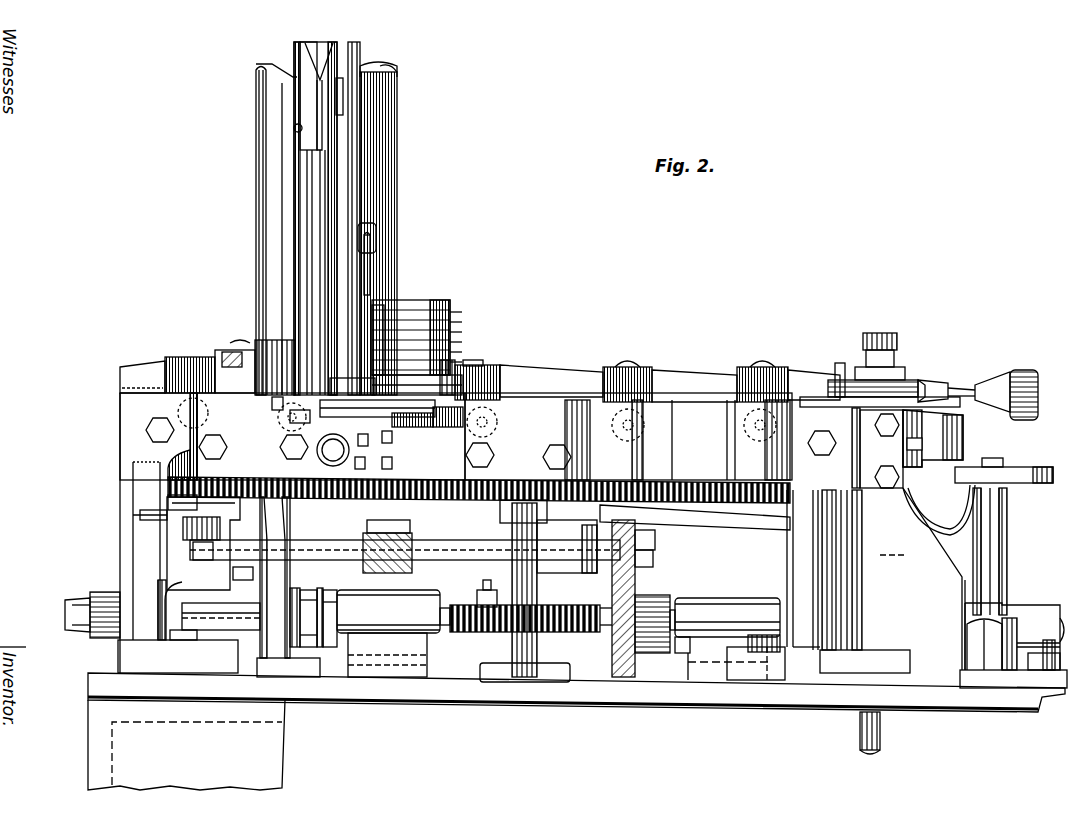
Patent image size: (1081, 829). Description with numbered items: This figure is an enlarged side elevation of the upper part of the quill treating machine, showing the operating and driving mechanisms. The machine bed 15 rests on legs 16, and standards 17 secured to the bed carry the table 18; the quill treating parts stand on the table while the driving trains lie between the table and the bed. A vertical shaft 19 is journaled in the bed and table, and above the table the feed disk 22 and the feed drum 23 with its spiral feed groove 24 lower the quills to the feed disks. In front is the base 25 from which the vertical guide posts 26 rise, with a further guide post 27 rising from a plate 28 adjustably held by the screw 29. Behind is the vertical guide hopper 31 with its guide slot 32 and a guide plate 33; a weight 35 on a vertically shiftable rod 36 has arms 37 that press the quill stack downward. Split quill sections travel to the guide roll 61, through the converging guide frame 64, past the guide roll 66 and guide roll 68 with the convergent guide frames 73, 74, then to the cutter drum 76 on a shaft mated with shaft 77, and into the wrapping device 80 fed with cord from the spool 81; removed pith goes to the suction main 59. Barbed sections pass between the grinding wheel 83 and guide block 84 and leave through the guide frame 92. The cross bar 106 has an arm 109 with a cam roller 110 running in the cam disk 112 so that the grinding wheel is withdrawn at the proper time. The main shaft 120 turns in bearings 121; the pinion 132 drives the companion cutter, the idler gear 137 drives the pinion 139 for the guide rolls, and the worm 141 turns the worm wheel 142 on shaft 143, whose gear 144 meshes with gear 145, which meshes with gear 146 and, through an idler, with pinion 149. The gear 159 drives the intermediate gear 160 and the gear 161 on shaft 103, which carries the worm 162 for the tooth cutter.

The machine bed 15 is at (357, 690).
The legs 16 is at (282, 762).
The standards 17 is at (120, 545).
The table 18 is at (168, 462).
The vertical shaft 19 is at (232, 594).
The feed disk 22 is at (395, 390).
The feed drum 23 is at (420, 300).
The spiral feed groove 24 is at (462, 312).
The base 25 is at (415, 438).
The vertical guide posts 26 is at (315, 225).
The guide post 27 is at (397, 140).
The plate 28 is at (477, 380).
The screw 29 is at (462, 340).
The vertical guide hopper 31 is at (318, 44).
The guide slot 32 is at (302, 98).
The guide plate 33 is at (296, 128).
The weight 35 is at (372, 230).
The vertically shiftable rod 36 is at (376, 250).
The arms 37 is at (385, 190).
The suction main 59 is at (397, 90).
The guide roll 61 is at (500, 355).
The converging guide frame 64 is at (570, 372).
The guide roll 66 is at (652, 367).
The guide roll 68 is at (775, 366).
The convergent guide frame 73 is at (700, 370).
The convergent guide frame 74 is at (805, 380).
The cutter drum 76 is at (930, 362).
The shaft 77 is at (882, 742).
The wrapping device 80 is at (993, 380).
The spool 81 is at (178, 410).
The grinding wheel 83 is at (232, 348).
The guide block 84 is at (215, 360).
The guide frame 92 is at (140, 370).
The shaft 103 is at (448, 520).
The cross bar 106 is at (300, 510).
The arm 109 is at (237, 480).
The cam roller 110 is at (210, 575).
The cam disk 112 is at (160, 525).
The main shaft 120 is at (67, 610).
The bearings 121 is at (1030, 600).
The pinion 132 is at (775, 517).
The idler gear 137 is at (700, 512).
The pinion 139 is at (655, 507).
The worm 141 is at (487, 580).
The worm wheel 142 is at (470, 640).
The shaft 143 is at (560, 575).
The gear 144 is at (605, 455).
The gear 145 is at (420, 510).
The gear 146 is at (238, 470).
The pinion 149 is at (500, 512).
The gear 159 is at (622, 677).
The intermediate gear 160 is at (653, 565).
The gear 161 is at (655, 535).
The worm 162 is at (363, 565).